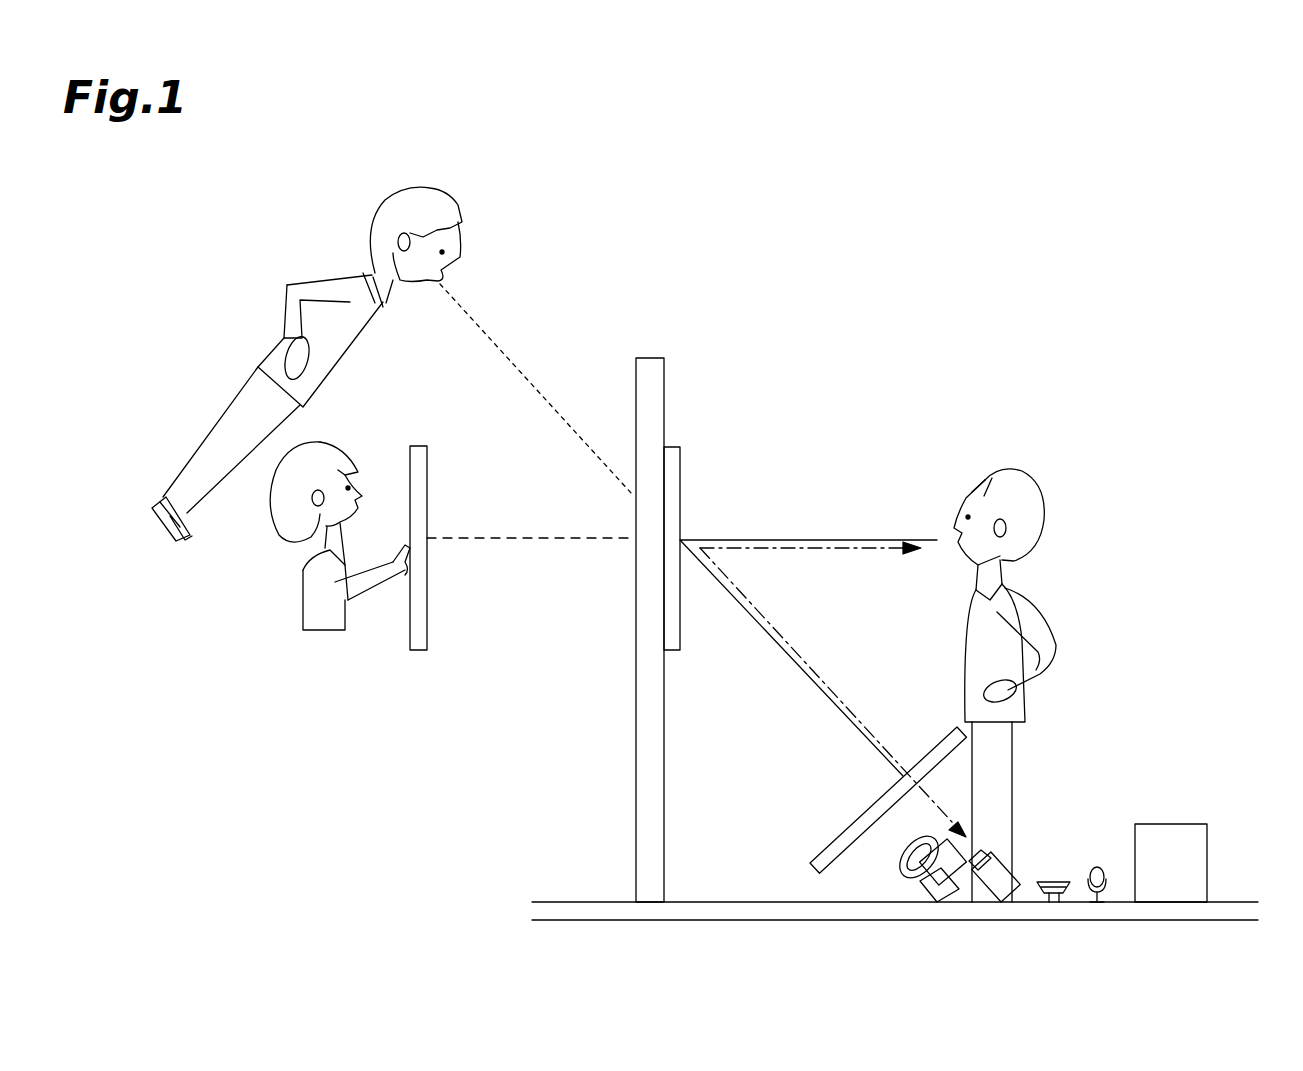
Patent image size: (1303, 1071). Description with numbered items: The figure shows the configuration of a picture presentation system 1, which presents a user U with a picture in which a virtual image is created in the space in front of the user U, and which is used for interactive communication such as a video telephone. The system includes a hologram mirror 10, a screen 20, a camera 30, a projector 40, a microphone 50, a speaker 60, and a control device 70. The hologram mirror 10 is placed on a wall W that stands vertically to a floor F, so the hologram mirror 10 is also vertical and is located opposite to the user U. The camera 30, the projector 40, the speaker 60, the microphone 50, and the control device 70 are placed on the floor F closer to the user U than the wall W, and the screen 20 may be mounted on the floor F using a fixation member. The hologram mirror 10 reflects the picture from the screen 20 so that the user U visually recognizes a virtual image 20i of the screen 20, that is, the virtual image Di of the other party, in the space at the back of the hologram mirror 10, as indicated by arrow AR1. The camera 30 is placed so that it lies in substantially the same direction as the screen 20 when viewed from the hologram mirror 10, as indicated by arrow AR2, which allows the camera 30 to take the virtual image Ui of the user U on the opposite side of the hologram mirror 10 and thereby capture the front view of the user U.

The picture presentation system 1 is at (1136, 242).
The hologram mirror 10 is at (680, 468).
The screen 20 is at (832, 847).
The virtual image of the screen 20i is at (427, 462).
The camera 30 is at (1008, 882).
The projector 40 is at (905, 882).
The microphone 50 is at (1095, 866).
The speaker 60 is at (1058, 880).
The control device 70 is at (1207, 845).
The wall W is at (664, 376).
The floor F is at (773, 904).
The user U is at (1050, 467).
The virtual image of the user Ui is at (357, 196).
The virtual image of the other party Di is at (362, 444).
The arrow indicating reflection from screen to user AR1 is at (810, 562).
The arrow indicating direction of camera from hologram mirror AR2 is at (836, 692).